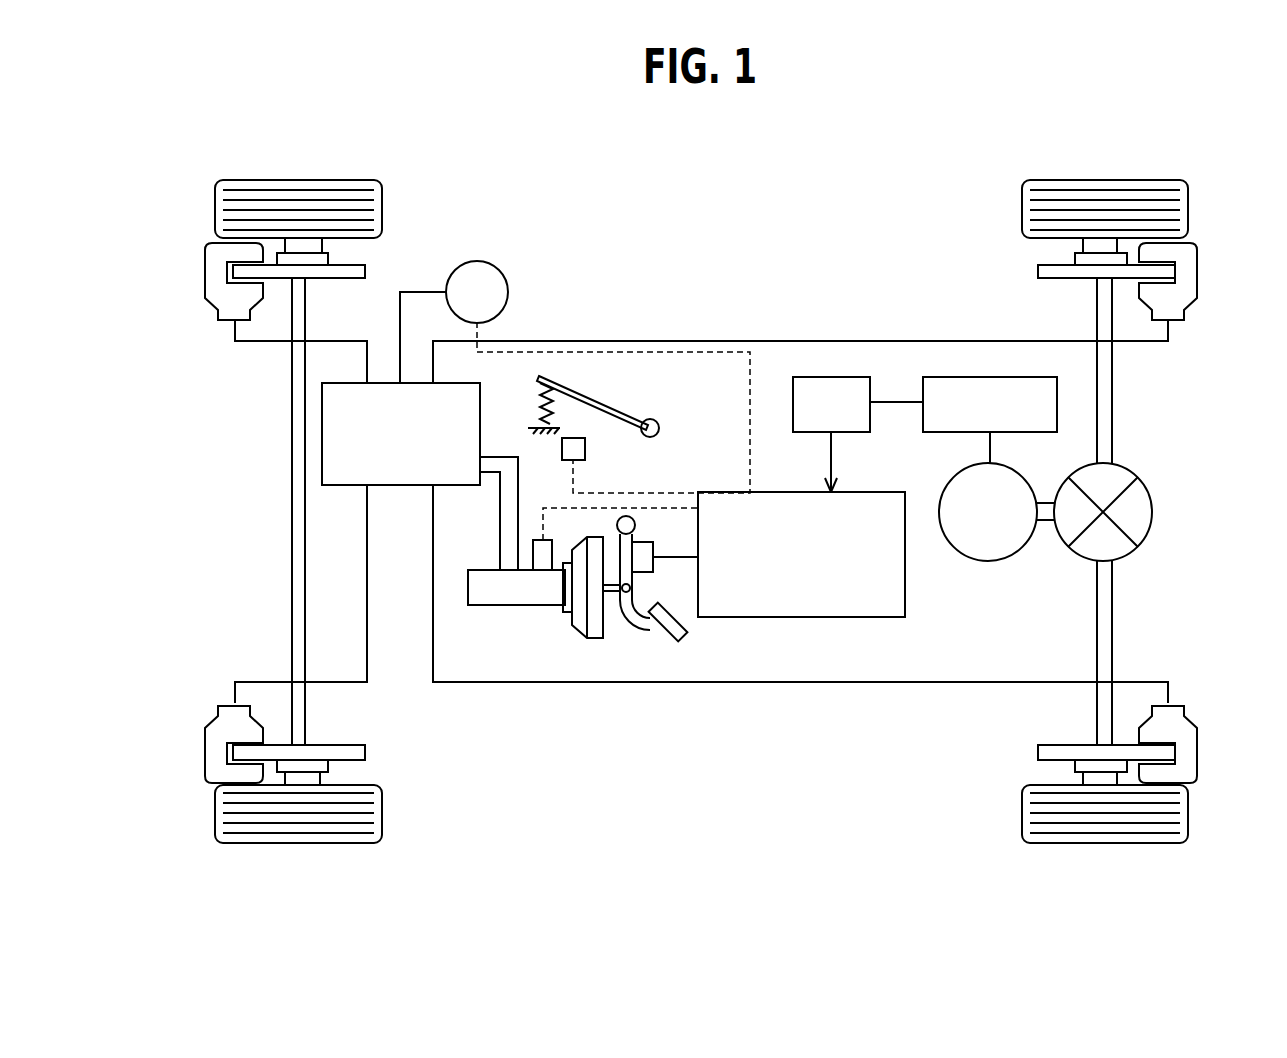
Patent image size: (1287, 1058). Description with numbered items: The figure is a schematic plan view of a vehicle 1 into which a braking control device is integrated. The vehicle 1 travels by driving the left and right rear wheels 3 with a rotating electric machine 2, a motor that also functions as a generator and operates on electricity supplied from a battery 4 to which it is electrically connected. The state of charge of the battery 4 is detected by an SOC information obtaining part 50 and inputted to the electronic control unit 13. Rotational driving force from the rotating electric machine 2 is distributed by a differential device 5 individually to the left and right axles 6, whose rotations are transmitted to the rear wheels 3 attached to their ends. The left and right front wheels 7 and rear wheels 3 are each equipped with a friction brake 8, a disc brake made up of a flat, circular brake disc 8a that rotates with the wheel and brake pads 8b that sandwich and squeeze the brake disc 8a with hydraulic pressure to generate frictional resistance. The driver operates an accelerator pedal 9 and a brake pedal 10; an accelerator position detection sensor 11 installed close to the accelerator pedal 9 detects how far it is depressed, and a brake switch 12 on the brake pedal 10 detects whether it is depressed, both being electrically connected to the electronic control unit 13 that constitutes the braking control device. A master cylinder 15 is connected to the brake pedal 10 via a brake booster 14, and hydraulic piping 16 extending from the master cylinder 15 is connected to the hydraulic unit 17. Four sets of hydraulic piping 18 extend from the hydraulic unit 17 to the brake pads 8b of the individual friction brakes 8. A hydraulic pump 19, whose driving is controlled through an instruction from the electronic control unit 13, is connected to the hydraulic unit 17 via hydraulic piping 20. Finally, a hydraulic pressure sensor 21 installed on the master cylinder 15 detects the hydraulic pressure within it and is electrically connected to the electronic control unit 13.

The vehicle 1 is at (576, 152).
The rotating electric machine 2 is at (988, 561).
The rear wheels 3 is at (1106, 180).
The battery 4 is at (990, 377).
The differential device 5 is at (1152, 512).
The axles 6 is at (1112, 402).
The front wheels 7 is at (299, 180).
The friction brake 8 is at (701, 511).
The brake disc 8a is at (365, 272).
The brake pads 8b is at (205, 273).
The accelerator pedal 9 is at (593, 383).
The brake pedal 10 is at (685, 623).
The accelerator position detection sensor 11 is at (587, 449).
The brake switch 12 is at (643, 542).
The electronic control unit 13 is at (862, 492).
The brake booster 14 is at (593, 638).
The master cylinder 15 is at (518, 605).
The hydraulic piping 16 is at (500, 523).
The hydraulic unit 17 is at (480, 427).
The hydraulic piping 18 is at (267, 341).
The hydraulic pump 19 is at (477, 261).
The hydraulic piping 20 is at (400, 309).
The hydraulic pressure sensor 21 is at (542, 540).
The SOC information obtaining part 50 is at (830, 377).